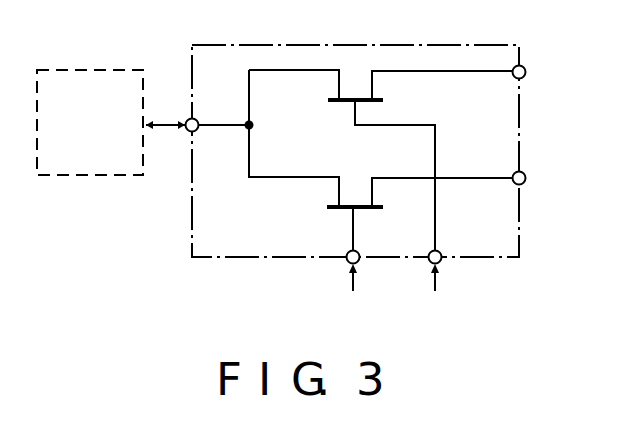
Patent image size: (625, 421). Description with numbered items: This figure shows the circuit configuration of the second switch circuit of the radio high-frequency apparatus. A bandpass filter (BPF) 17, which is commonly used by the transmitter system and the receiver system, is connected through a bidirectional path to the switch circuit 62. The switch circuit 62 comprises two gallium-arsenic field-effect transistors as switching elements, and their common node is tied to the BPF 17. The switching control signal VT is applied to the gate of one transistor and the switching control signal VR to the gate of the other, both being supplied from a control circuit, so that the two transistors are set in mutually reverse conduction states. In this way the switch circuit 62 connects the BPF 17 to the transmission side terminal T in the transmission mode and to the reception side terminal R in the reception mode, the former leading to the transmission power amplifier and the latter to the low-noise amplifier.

The bandpass filter 17 is at (117, 70).
The switch circuit 62 is at (365, 150).
The R terminal R is at (529, 73).
The T terminal T is at (528, 179).
The switching control signal VT is at (368, 271).
The switching control signal VR is at (451, 271).